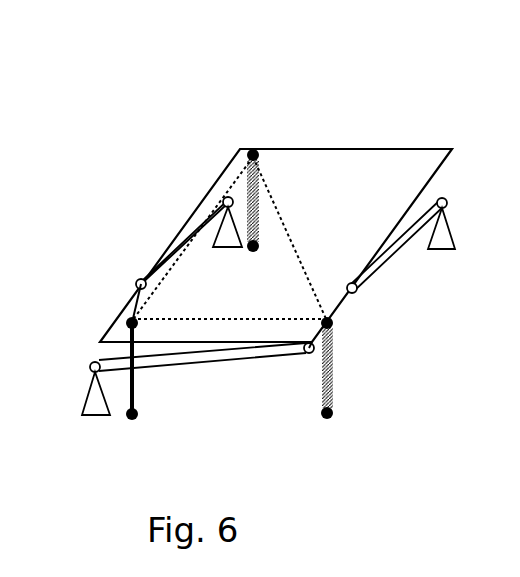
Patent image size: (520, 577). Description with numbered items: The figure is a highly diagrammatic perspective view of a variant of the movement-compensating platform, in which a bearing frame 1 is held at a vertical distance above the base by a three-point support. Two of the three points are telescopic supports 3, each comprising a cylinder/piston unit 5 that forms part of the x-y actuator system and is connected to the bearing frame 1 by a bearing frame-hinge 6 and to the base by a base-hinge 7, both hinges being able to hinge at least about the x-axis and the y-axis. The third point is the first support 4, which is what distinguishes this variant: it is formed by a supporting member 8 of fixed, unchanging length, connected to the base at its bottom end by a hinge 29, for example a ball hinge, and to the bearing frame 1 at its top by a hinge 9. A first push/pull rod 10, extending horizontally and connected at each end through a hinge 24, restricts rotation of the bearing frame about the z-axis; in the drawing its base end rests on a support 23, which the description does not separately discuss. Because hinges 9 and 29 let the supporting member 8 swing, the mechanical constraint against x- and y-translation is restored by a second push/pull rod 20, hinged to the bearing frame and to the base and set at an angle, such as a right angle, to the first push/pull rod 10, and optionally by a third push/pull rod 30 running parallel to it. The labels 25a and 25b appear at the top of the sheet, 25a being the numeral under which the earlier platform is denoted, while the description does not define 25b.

The bearing frame 1 is at (363, 162).
The telescopic support 3 is at (239, 127).
The first support 4 is at (132, 457).
The cylinder/piston unit 5 is at (331, 374).
The bearing frame-hinge 6 is at (332, 323).
The base-hinge 7 is at (332, 414).
The supporting member 8 is at (135, 383).
The hinge 9 is at (127, 318).
The first push/pull rod 10 is at (238, 362).
The second push/pull rod 20 is at (403, 247).
The support 23 is at (92, 403).
The hinge 24 is at (91, 365).
The platform 25a is at (13, 49).
The direction 25b is at (150, 78).
The hinge 29 is at (138, 418).
The third push/pull rod 30 is at (185, 240).